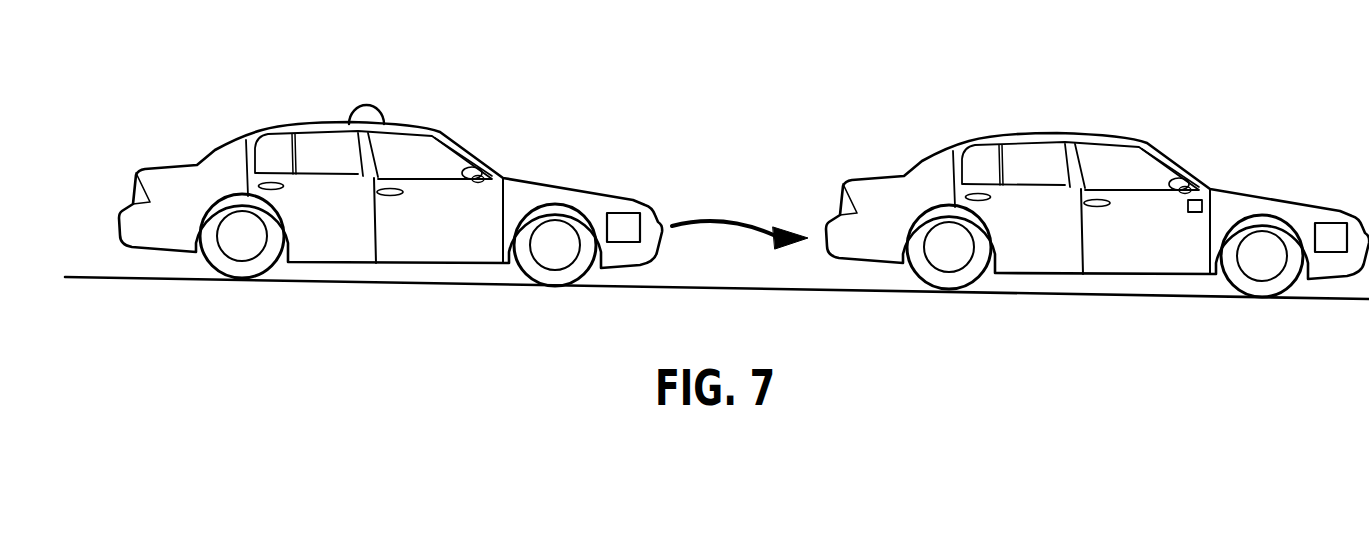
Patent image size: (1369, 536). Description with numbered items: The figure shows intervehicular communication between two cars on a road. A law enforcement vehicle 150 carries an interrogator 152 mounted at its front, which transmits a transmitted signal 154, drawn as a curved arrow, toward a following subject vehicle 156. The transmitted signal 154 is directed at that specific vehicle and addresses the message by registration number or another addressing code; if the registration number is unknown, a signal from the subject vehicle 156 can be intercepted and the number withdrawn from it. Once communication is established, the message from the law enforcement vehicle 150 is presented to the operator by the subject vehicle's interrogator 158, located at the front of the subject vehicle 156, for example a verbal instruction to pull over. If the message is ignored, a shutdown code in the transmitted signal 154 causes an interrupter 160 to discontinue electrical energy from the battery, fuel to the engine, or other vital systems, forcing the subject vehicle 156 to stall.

The law enforcement vehicle 150 is at (351, 232).
The interrogator 152 is at (627, 220).
The transmitted signal 154 is at (730, 225).
The subject vehicle 156 is at (1056, 243).
The subject vehicle's interrogator 158 is at (1330, 229).
The interrupter 160 is at (1195, 213).